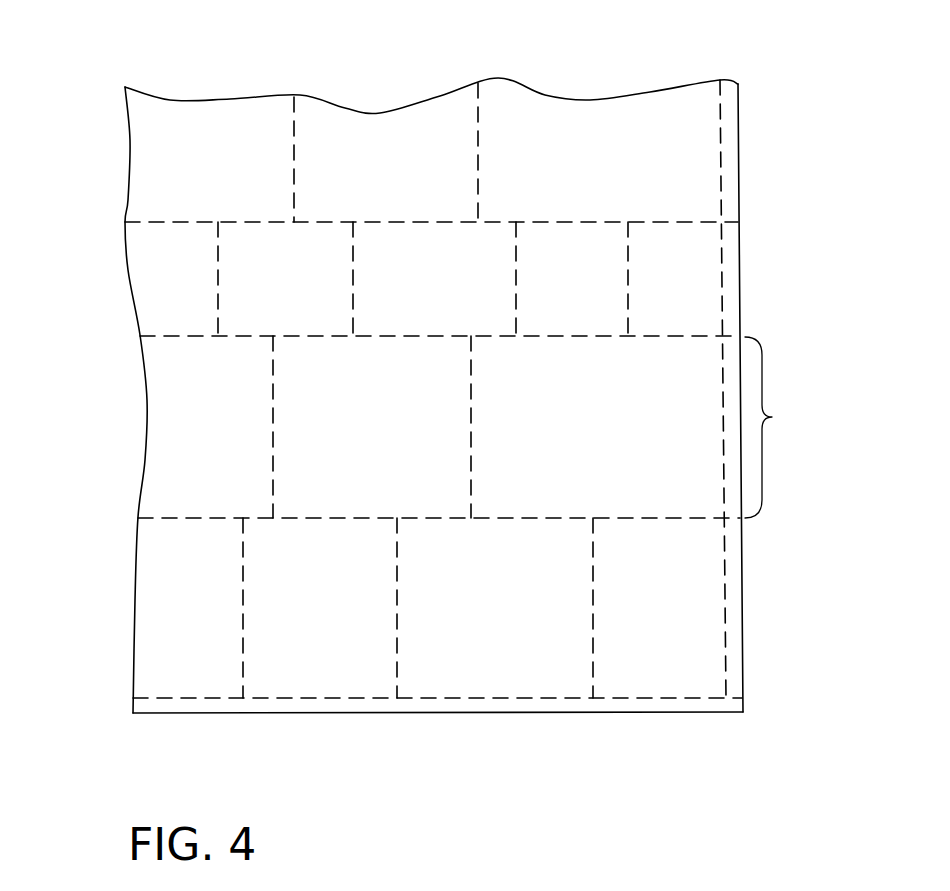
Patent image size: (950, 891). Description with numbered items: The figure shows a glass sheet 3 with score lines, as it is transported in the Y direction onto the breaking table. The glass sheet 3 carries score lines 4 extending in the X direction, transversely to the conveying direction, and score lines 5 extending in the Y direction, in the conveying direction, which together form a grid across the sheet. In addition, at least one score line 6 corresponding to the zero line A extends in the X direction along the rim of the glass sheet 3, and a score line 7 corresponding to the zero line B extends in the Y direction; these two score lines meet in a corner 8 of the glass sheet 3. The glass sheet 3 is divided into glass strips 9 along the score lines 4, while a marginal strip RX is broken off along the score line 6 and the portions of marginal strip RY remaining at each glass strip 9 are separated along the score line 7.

The glass sheet 3 is at (368, 86).
The score lines 4 is at (161, 226).
The score lines 5 is at (293, 153).
The score line 6 is at (211, 700).
The score line 7 is at (722, 246).
The corner 8 is at (708, 74).
The glass strips 9 is at (777, 427).